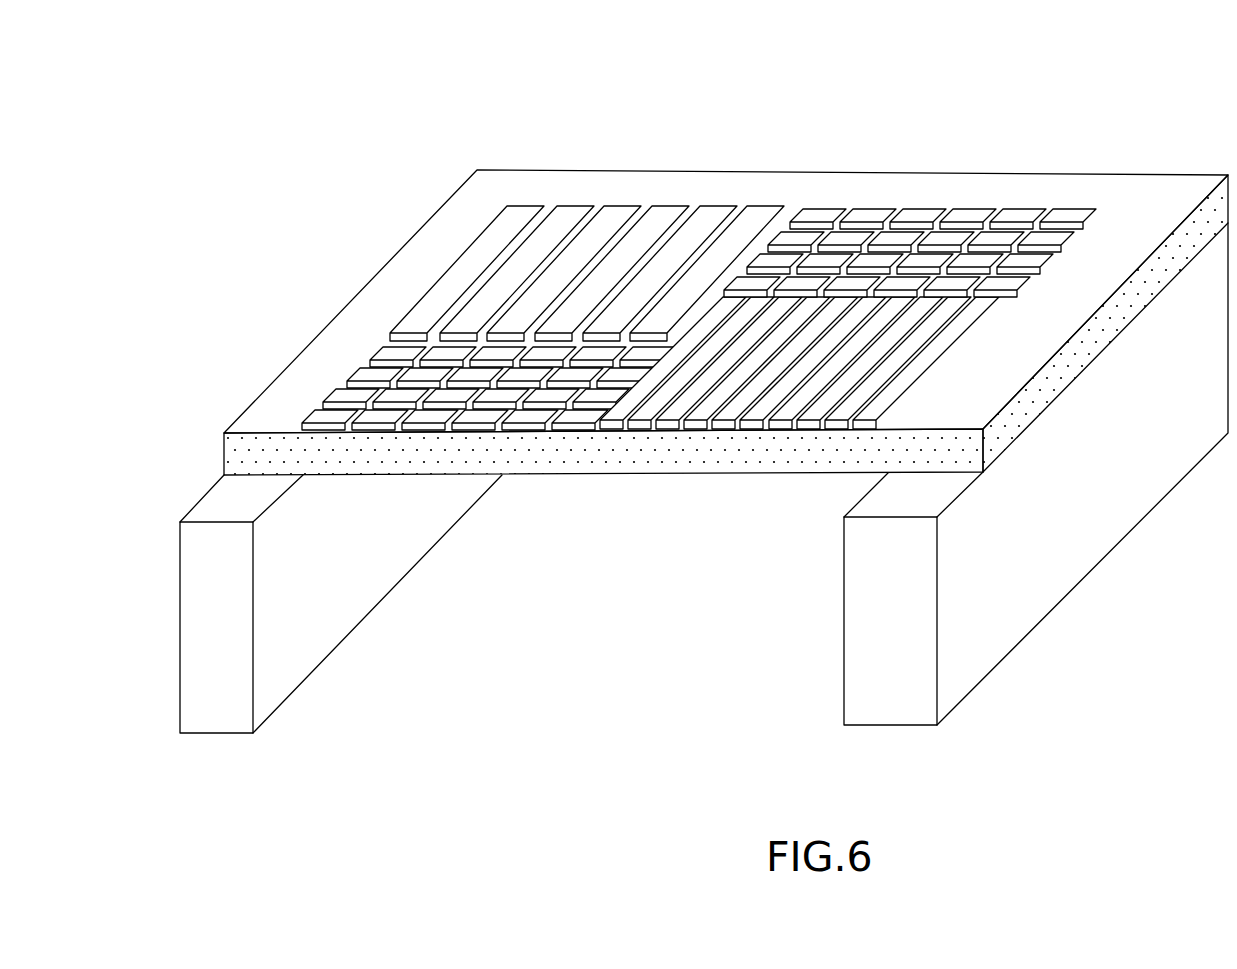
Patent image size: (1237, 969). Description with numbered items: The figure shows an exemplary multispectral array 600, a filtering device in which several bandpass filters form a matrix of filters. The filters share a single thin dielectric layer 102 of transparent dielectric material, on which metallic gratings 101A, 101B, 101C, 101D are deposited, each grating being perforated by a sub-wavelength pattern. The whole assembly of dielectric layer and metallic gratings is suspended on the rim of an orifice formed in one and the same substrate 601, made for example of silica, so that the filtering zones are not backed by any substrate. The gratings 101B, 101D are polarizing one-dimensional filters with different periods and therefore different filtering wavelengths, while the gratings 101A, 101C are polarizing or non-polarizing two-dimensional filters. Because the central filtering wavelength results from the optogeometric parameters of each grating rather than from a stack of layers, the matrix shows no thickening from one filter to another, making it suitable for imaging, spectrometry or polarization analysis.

The multispectral array 600 is at (782, 95).
The two-dimensional filter grating 101A is at (393, 345).
The one-dimensional filter grating 101B is at (487, 248).
The two-dimensional filter grating 101C is at (845, 235).
The one-dimensional filter grating 101D is at (960, 320).
The dielectric layer 102 is at (622, 460).
The substrate 601 is at (878, 707).